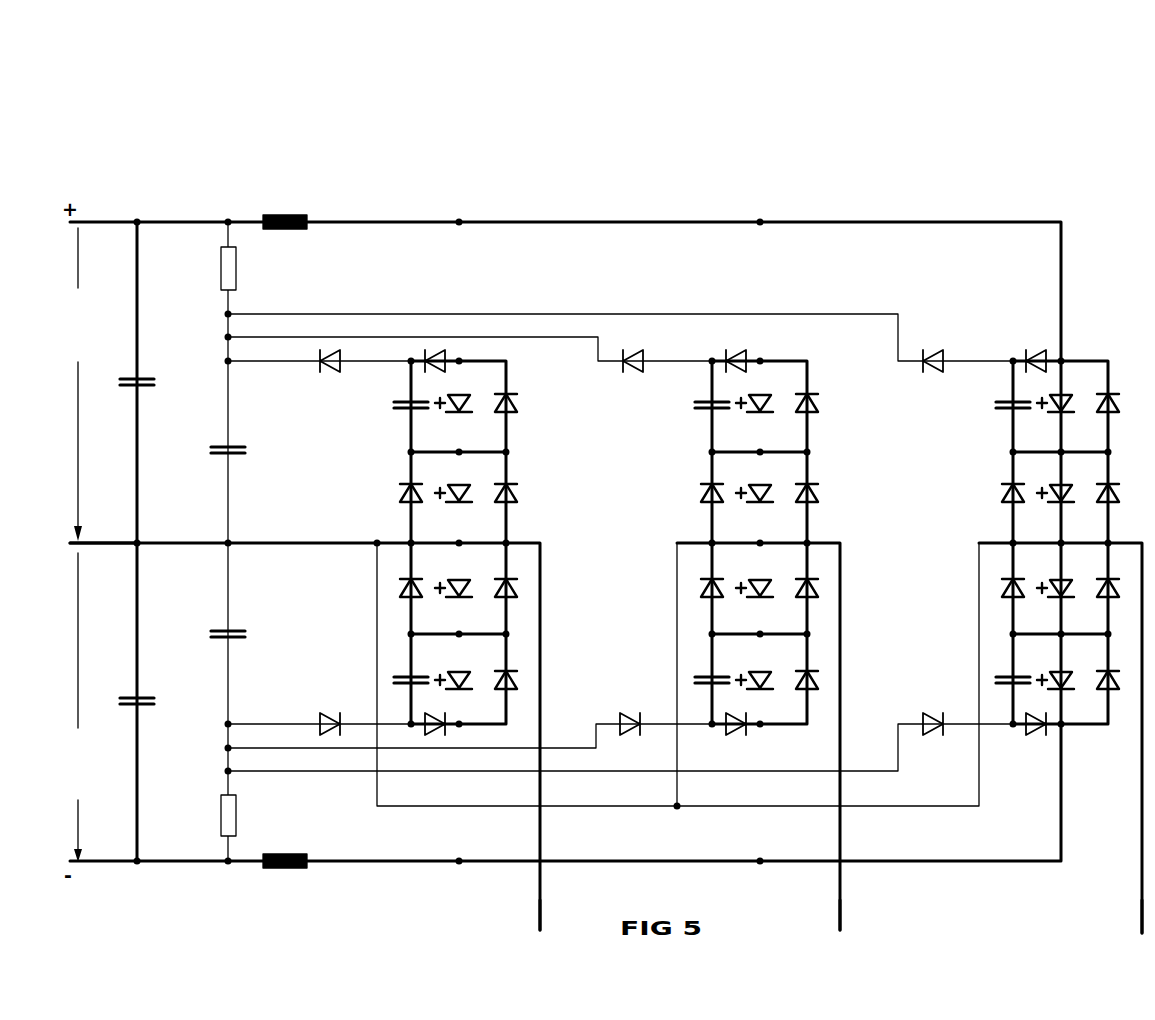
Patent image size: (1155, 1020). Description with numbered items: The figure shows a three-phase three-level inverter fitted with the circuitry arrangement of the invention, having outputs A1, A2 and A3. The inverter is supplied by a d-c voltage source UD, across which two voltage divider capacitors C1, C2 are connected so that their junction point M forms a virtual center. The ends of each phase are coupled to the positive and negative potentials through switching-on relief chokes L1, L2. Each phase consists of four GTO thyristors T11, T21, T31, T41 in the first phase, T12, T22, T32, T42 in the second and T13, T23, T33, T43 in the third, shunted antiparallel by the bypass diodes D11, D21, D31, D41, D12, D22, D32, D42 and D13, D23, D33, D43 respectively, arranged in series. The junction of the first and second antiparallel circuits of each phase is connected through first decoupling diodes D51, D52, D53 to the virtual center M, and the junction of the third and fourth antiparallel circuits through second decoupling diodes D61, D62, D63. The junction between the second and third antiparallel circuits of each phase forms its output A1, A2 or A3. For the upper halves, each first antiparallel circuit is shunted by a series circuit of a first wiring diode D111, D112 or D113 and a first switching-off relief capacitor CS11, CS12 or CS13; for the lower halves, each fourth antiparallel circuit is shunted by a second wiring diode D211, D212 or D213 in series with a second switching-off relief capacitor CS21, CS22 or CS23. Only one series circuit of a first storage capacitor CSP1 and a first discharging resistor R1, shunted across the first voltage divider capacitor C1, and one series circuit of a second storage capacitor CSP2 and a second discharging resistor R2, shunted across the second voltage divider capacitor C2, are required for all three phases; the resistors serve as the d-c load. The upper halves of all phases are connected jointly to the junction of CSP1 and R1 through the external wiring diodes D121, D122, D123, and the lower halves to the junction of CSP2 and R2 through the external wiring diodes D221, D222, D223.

The first voltage divider capacitor C1 is at (148, 378).
The second voltage divider capacitor C2 is at (146, 707).
The first discharging resistor R1 is at (221, 278).
The second discharging resistor R2 is at (221, 826).
The switching-on relief choke L1 is at (283, 231).
The switching-on relief choke L2 is at (276, 853).
The first storage capacitor CSP1 is at (246, 449).
The second storage capacitor CSP2 is at (246, 640).
The first switching-off relief capacitor CS11 is at (397, 410).
The first switching-off relief capacitor CS12 is at (698, 410).
The first switching-off relief capacitor CS13 is at (999, 410).
The second switching-off relief capacitor CS21 is at (395, 676).
The second switching-off relief capacitor CS22 is at (696, 676).
The second switching-off relief capacitor CS23 is at (997, 676).
The first wiring diode D111 is at (437, 350).
The first wiring diode D112 is at (738, 350).
The first wiring diode D113 is at (1037, 350).
The third wiring diode D121 is at (333, 372).
The third wiring diode D122 is at (635, 350).
The third wiring diode D123 is at (935, 350).
The second wiring diode D211 is at (434, 737).
The second wiring diode D212 is at (737, 737).
The second wiring diode D213 is at (1037, 737).
The fourth wiring diode D221 is at (334, 713).
The fourth wiring diode D222 is at (632, 713).
The fourth wiring diode D223 is at (935, 738).
The GTO thyristor T11 is at (463, 397).
The GTO thyristor T12 is at (764, 397).
The GTO thyristor T13 is at (1065, 397).
The GTO thyristor T21 is at (463, 487).
The GTO thyristor T22 is at (764, 487).
The GTO thyristor T23 is at (1065, 487).
The GTO thyristor T31 is at (463, 582).
The GTO thyristor T32 is at (764, 582).
The GTO thyristor T33 is at (1065, 582).
The GTO thyristor T41 is at (463, 674).
The GTO thyristor T42 is at (764, 674).
The GTO thyristor T43 is at (1065, 674).
The bypass diode D11 is at (511, 397).
The bypass diode D12 is at (812, 397).
The bypass diode D13 is at (1113, 397).
The bypass diode D21 is at (511, 487).
The bypass diode D22 is at (812, 487).
The bypass diode D23 is at (1113, 487).
The bypass diode D31 is at (498, 595).
The bypass diode D32 is at (799, 595).
The bypass diode D33 is at (1100, 595).
The bypass diode D41 is at (498, 687).
The bypass diode D42 is at (799, 687).
The bypass diode D43 is at (1100, 687).
The first decoupling diode D51 is at (416, 487).
The first decoupling diode D52 is at (717, 487).
The first decoupling diode D53 is at (1018, 487).
The second decoupling diode D61 is at (418, 595).
The second decoupling diode D62 is at (719, 595).
The second decoupling diode D63 is at (1020, 595).
The output A1 is at (539, 913).
The output A2 is at (839, 913).
The output A3 is at (1141, 913).
The junction point M is at (94, 533).
The d-c voltage source UD is at (91, 324).